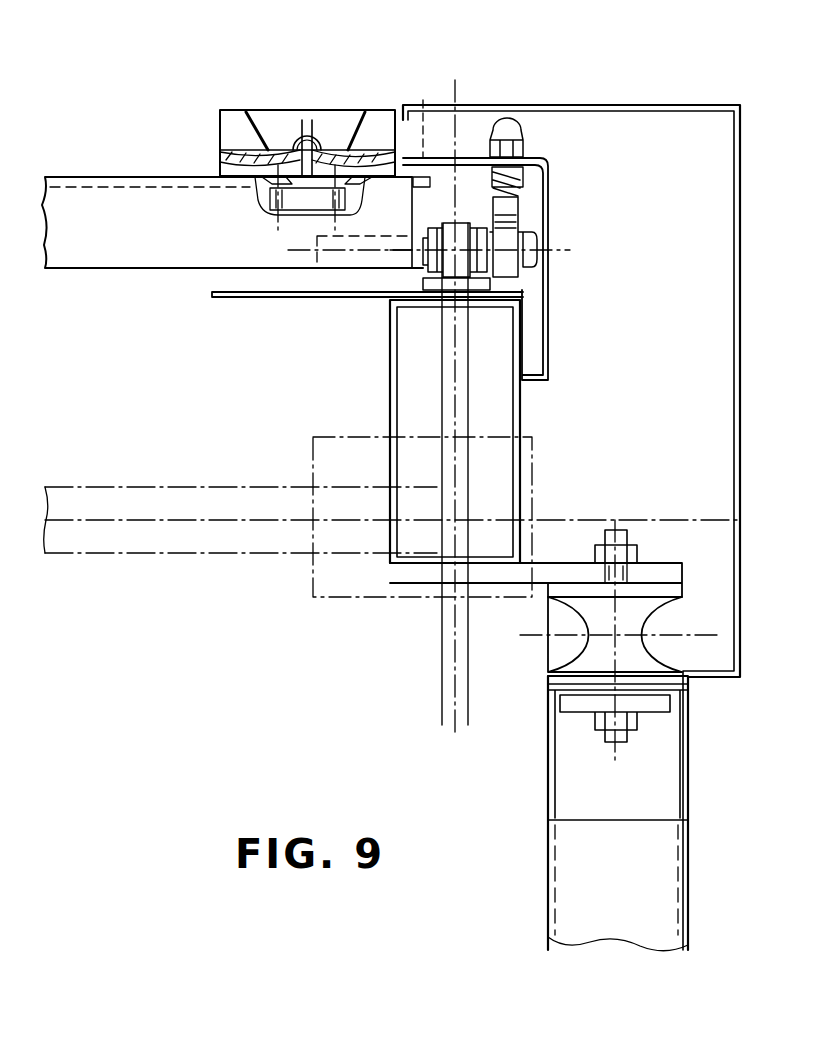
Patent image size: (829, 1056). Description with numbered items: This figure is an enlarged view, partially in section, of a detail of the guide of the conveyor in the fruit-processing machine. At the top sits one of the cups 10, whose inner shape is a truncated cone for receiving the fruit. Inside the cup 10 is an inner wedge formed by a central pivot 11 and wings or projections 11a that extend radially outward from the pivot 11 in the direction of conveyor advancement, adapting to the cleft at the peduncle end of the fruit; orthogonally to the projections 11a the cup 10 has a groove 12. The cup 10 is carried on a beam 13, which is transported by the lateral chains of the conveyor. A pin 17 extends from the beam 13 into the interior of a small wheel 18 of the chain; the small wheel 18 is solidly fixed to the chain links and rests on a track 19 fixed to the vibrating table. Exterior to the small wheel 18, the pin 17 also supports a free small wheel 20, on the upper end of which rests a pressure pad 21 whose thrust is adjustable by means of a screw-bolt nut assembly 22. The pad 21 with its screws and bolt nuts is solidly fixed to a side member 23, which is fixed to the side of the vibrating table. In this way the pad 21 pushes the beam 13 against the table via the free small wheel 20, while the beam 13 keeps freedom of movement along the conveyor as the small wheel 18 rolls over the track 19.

The cup 10 is at (222, 168).
The central pivot 11 is at (316, 122).
The wing 11a is at (307, 145).
The groove 12 is at (232, 128).
The beam 13 is at (125, 232).
The pin 17 is at (347, 258).
The small wheel 18 is at (460, 232).
The track 19 is at (433, 283).
The free small wheel 20 is at (560, 177).
The pressure pad 21 is at (530, 233).
The screw-bolt nut assembly 22 is at (510, 130).
The side member 23 is at (423, 100).